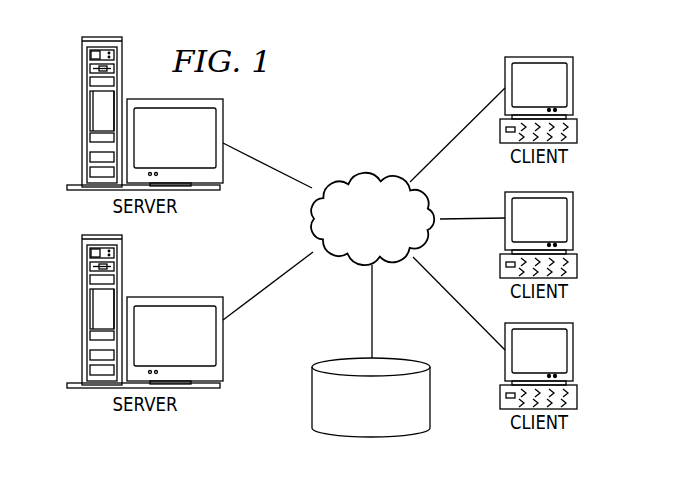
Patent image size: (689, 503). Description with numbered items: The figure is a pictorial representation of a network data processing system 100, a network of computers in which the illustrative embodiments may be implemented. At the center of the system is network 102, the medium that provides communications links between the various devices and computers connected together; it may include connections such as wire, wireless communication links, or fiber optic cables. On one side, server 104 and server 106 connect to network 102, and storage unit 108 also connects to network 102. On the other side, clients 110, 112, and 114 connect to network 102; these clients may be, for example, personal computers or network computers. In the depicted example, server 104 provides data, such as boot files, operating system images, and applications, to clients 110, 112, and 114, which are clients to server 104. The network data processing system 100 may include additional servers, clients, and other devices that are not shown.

The network data processing system 100 is at (419, 68).
The network 102 is at (345, 172).
The server 104 is at (82, 113).
The server 106 is at (82, 310).
The storage unit 108 is at (352, 437).
The client 110 is at (573, 85).
The client 112 is at (572, 218).
The client 114 is at (572, 352).